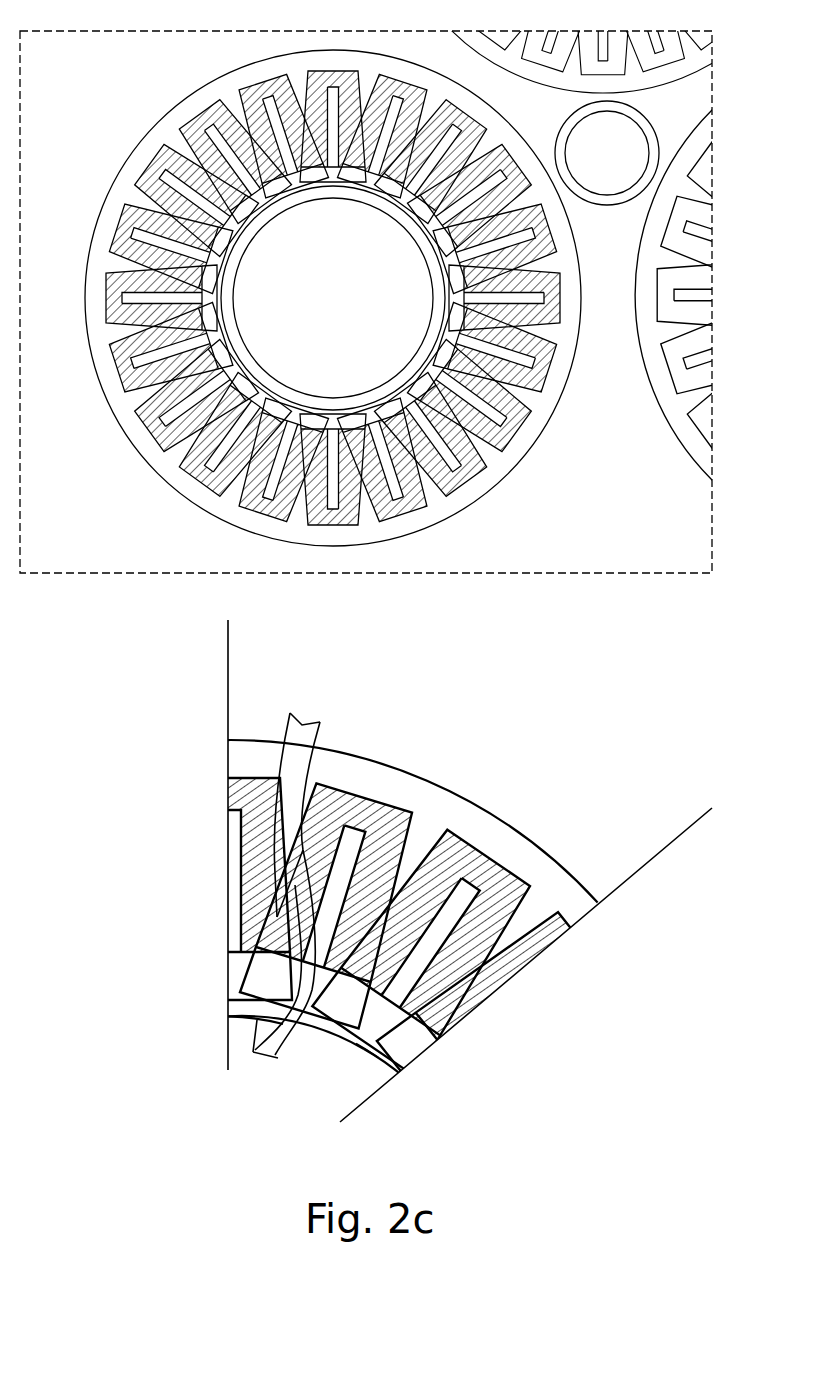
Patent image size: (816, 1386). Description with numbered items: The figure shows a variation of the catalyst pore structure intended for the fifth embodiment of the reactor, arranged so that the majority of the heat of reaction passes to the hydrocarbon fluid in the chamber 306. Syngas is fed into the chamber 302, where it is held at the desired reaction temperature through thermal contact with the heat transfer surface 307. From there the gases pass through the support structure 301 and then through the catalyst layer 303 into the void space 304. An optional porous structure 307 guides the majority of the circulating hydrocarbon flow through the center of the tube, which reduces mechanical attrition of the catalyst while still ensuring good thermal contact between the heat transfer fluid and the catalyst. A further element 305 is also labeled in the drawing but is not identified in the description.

The support structure 301 is at (427, 818).
The chamber 302 is at (622, 866).
The catalyst layer 303 is at (548, 943).
The void space 304 is at (420, 1043).
The inner connection portion 305 is at (413, 1040).
The chamber 306 is at (342, 1095).
The heat transfer surface 307 is at (643, 182).